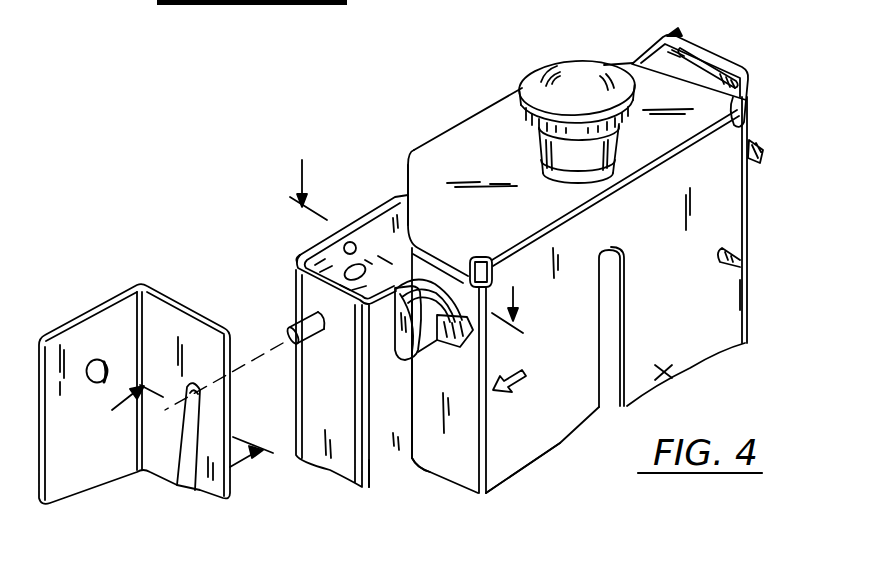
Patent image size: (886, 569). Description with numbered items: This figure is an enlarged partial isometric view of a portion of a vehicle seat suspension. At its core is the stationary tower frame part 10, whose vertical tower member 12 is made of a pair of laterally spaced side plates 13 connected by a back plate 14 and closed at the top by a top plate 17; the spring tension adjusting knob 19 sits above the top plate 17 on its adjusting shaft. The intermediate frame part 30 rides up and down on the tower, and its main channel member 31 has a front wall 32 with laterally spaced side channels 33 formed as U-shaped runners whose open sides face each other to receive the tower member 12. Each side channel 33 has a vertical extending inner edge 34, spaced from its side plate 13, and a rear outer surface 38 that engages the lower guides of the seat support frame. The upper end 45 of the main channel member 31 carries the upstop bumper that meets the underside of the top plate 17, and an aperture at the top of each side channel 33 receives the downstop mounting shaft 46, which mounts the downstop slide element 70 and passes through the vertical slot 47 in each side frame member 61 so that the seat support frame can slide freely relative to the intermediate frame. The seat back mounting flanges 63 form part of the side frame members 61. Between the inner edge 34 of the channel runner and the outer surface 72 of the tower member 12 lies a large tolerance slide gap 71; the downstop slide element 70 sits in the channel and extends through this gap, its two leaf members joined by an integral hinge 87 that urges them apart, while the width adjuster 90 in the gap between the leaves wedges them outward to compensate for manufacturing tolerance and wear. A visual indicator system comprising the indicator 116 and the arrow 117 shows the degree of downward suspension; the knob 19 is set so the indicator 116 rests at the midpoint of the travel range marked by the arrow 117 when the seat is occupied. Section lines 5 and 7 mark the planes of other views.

The section line 5- 5 is at (398, 246).
The section line 7- 7 is at (180, 438).
The stationary tower frame part 10 is at (707, 320).
The vertical tower member 12 is at (733, 293).
The side plates 13 is at (750, 197).
The back plate 14 is at (660, 368).
The top plate 17 is at (476, 128).
The spring tension adjusting knob 19 is at (597, 37).
The intermediate frame part 30 is at (687, 3).
The main channel member 31 is at (391, 195).
The front wall 32 is at (323, 237).
The side channels 33 is at (697, 40).
The vertical extending inner edge 34 is at (423, 380).
The rear outer surface 38 is at (746, 100).
The upper end of the main side channel 45 is at (297, 262).
The downstop mounting shaft 46 is at (281, 330).
The slots 47 is at (195, 416).
The side frame members 61 is at (156, 308).
The seat back mounting flanges 63 is at (100, 302).
The downstop slide element 70 is at (356, 237).
The slide gap 71 is at (423, 440).
The outer surface of the tower member 72 is at (473, 473).
The integral hinge 87 is at (357, 247).
The width adjuster 90 is at (433, 272).
The indicator 116 is at (781, 133).
The arrow 117 is at (740, 267).